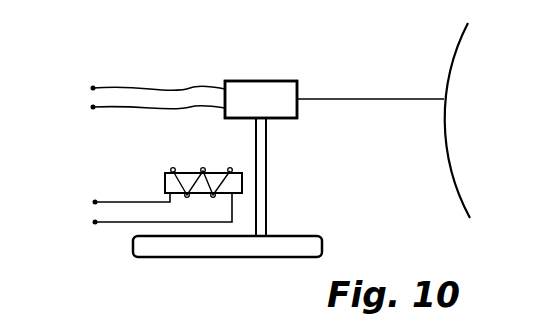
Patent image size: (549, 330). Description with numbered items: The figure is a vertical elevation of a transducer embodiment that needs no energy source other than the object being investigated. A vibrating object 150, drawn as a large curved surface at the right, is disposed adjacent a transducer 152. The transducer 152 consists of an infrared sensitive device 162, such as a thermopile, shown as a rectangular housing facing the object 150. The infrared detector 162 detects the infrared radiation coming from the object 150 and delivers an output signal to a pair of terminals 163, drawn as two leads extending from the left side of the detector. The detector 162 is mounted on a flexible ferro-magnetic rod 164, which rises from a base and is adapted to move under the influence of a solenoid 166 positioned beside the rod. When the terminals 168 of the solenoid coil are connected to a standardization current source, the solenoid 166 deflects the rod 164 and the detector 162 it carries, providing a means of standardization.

The vibrating object 150 is at (453, 61).
The transducer 152 is at (303, 81).
The infrared sensitive device 162 is at (262, 81).
The terminals 163 is at (93, 88).
The flexible ferro-magnetic rod 164 is at (256, 142).
The solenoid 166 is at (203, 170).
The terminals of the solenoid coil 168 is at (95, 202).